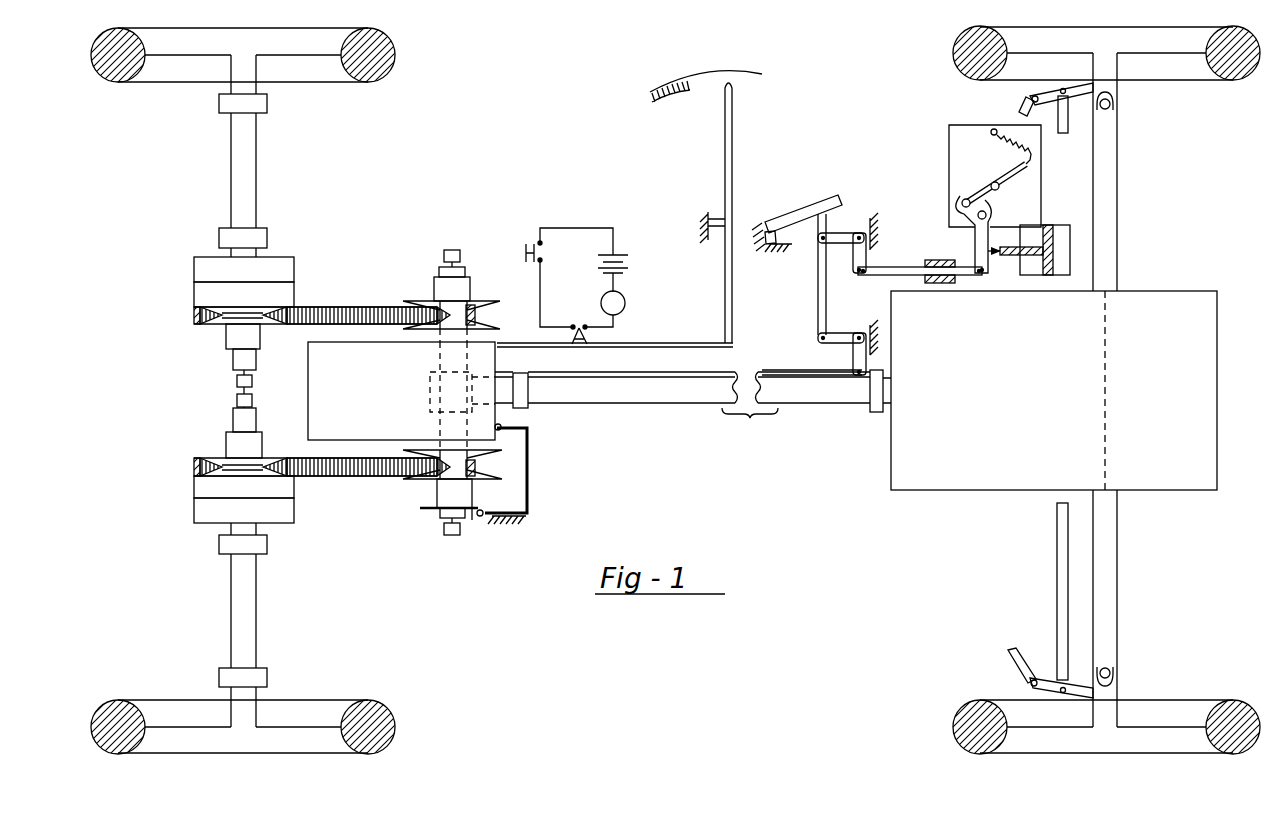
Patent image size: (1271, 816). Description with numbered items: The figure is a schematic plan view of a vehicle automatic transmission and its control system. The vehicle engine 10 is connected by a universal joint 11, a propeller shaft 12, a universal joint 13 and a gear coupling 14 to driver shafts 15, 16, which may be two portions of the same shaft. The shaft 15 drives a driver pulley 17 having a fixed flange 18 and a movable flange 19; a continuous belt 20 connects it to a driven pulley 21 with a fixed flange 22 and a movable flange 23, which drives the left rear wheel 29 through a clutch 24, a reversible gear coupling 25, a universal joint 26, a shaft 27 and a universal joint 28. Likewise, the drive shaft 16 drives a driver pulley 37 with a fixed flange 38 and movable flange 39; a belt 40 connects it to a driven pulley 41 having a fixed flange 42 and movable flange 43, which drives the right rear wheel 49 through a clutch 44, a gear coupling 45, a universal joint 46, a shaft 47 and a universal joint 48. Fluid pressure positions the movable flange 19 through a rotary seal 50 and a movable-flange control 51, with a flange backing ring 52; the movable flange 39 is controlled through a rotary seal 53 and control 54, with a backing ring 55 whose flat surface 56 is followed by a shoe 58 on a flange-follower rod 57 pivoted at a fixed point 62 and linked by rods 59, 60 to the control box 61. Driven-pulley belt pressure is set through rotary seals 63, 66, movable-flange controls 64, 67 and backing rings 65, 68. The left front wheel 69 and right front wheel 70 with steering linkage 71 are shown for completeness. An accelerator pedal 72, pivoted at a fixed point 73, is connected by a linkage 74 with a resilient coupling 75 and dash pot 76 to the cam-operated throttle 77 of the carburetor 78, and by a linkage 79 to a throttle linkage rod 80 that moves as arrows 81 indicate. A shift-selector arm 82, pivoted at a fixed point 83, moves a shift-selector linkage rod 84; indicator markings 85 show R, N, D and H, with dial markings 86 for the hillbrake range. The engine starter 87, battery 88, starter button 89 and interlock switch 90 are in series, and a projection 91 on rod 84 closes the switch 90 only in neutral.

The vehicle engine 10 is at (965, 482).
The universal joint 11 is at (870, 405).
The propeller shaft 12 is at (796, 405).
The universal joint 13 is at (528, 405).
The gear coupling 14 is at (430, 401).
The driver shaft 15 is at (440, 362).
The driver shaft 16 is at (447, 425).
The driver pulley 17 is at (484, 312).
The fixed flange 18 is at (435, 330).
The movable flange 19 is at (478, 301).
The continuous belt 20 is at (314, 306).
The driven pulley 21 is at (178, 311).
The fixed flange 22 is at (200, 316).
The movable flange 23 is at (222, 325).
The clutch 24 is at (194, 292).
The gear coupling 25 is at (194, 270).
The universal joint 26 is at (219, 239).
The shaft 27 is at (232, 161).
The universal joint 28 is at (219, 102).
The left rear wheel 29 is at (140, 77).
The driver pulley 37 is at (480, 465).
The fixed flange 38 is at (490, 451).
The movable flange 39 is at (412, 479).
The continuous belt 40 is at (358, 478).
The driven pulley 41 is at (186, 467).
The fixed flange 42 is at (222, 472).
The movable flange 43 is at (216, 460).
The clutch 44 is at (294, 487).
The gear coupling 45 is at (194, 510).
The universal joint 46 is at (219, 546).
The shaft 47 is at (232, 610).
The universal joint 48 is at (219, 675).
The right rear wheel 49 is at (310, 700).
The rotary seal 50 is at (455, 252).
The movable-flange control 51 is at (440, 272).
The flange backing ring 52 is at (434, 291).
The rotary seal 53 is at (447, 536).
The movable-flange control 54 is at (440, 516).
The flange backing ring 55 is at (437, 492).
The flat surface 56 is at (473, 512).
The flange-follower rod 57 is at (516, 520).
The follower shoe 58 is at (481, 517).
The linkage rod 59 is at (529, 468).
The linkage rod 60 is at (506, 419).
The control box 61 is at (498, 342).
The fixed pivot point 62 is at (509, 512).
The rotary seal 63 is at (237, 380).
The movable-flange control 64 is at (256, 362).
The flange backing ring 65 is at (262, 340).
The rotary seal 66 is at (237, 402).
The movable-flange control 67 is at (256, 420).
The flange backing ring 68 is at (226, 440).
The left front wheel 69 is at (1200, 72).
The right front wheel 70 is at (1145, 706).
The steering linkage 71 is at (1056, 567).
The accelerator pedal 72 is at (810, 212).
The fixed pivot point 73 is at (775, 247).
The linkage 74 is at (876, 265).
The resilient coupling 75 is at (945, 262).
The dash pot 76 is at (1060, 225).
The cam-operated throttle 77 is at (1005, 178).
The engine carburetor 78 is at (958, 138).
The linkage 79 is at (818, 300).
The throttle linkage rod 80 is at (768, 370).
The arrows 81 is at (812, 232).
The shift-selector arm 82 is at (732, 112).
The fixed pivot point 83 is at (731, 222).
The shift-selector linkage rod 84 is at (653, 343).
The control-quadrant indicator markings 85 is at (766, 65).
The dial markings 86 is at (663, 97).
The engine starter 87 is at (626, 303).
The vehicle battery 88 is at (628, 258).
The operator's starter button 89 is at (526, 249).
The starter interlock switch 90 is at (572, 328).
The projection 91 is at (587, 332).